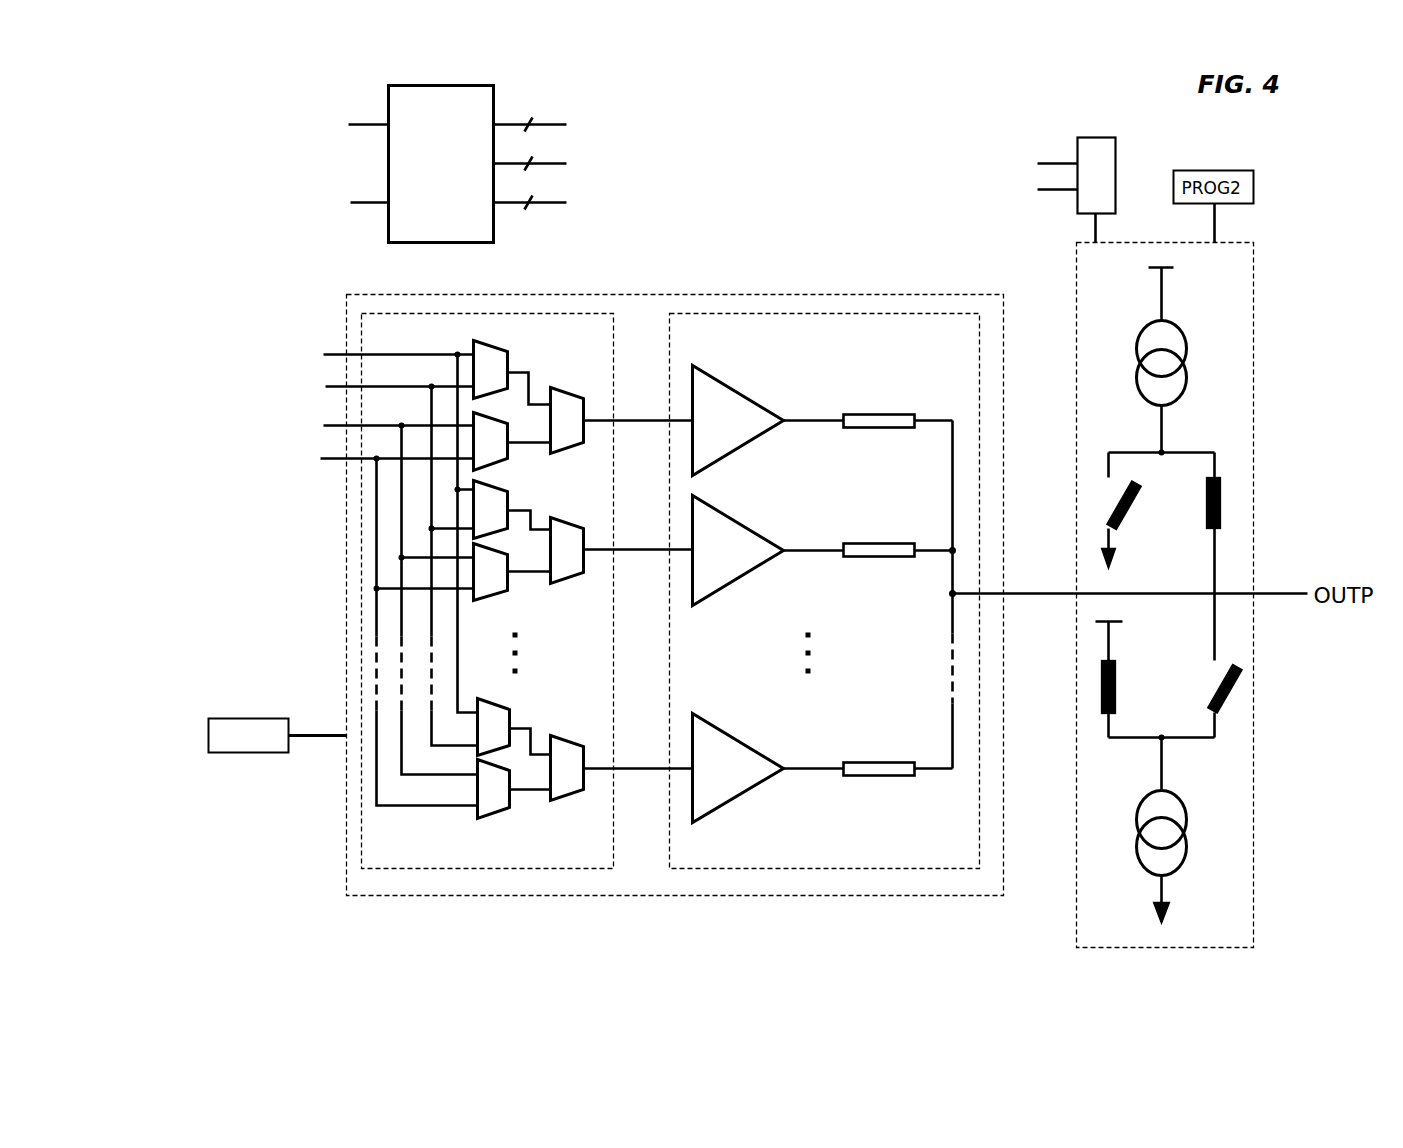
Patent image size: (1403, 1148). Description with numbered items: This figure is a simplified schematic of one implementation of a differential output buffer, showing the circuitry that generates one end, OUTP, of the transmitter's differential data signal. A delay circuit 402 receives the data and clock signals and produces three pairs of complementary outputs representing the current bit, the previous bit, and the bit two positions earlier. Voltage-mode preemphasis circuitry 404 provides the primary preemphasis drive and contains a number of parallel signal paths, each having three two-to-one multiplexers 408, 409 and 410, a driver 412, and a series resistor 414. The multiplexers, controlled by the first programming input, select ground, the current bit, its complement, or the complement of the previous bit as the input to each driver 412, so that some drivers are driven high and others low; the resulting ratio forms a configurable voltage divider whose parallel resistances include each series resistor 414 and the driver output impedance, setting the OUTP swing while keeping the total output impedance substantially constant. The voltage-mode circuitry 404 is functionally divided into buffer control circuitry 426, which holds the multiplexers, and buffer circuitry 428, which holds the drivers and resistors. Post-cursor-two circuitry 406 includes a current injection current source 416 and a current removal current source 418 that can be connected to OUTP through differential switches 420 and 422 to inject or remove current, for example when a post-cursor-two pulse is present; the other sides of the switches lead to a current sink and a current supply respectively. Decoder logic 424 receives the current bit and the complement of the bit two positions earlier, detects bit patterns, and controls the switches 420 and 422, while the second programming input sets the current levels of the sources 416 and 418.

The delay circuit 402 is at (443, 85).
The voltage-mode preemphasis circuitry 404 is at (405, 293).
The post-cursor2 circuitry 406 is at (1233, 242).
The 2-to-1 multiplexer 408 is at (508, 357).
The 2-to-1 multiplexer 409 is at (497, 463).
The 2-to-1 multiplexer 410 is at (575, 444).
The driver 412 is at (723, 458).
The series resistor 414 is at (885, 415).
The current injection current source 416 is at (1165, 405).
The current removal current source 418 is at (1166, 875).
The differential switch 420 is at (1205, 512).
The differential switch 422 is at (1215, 692).
The decoder logic 424 is at (1077, 213).
The buffer control circuitry 426 is at (472, 591).
The buffer circuitry 428 is at (825, 591).